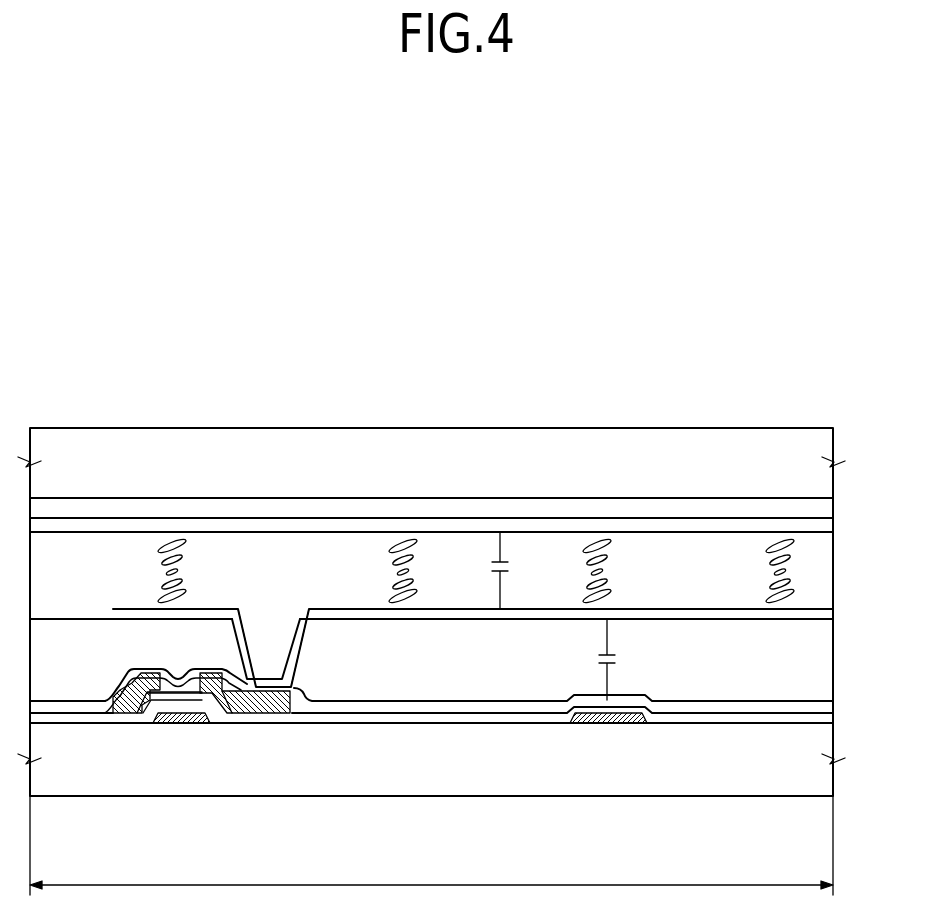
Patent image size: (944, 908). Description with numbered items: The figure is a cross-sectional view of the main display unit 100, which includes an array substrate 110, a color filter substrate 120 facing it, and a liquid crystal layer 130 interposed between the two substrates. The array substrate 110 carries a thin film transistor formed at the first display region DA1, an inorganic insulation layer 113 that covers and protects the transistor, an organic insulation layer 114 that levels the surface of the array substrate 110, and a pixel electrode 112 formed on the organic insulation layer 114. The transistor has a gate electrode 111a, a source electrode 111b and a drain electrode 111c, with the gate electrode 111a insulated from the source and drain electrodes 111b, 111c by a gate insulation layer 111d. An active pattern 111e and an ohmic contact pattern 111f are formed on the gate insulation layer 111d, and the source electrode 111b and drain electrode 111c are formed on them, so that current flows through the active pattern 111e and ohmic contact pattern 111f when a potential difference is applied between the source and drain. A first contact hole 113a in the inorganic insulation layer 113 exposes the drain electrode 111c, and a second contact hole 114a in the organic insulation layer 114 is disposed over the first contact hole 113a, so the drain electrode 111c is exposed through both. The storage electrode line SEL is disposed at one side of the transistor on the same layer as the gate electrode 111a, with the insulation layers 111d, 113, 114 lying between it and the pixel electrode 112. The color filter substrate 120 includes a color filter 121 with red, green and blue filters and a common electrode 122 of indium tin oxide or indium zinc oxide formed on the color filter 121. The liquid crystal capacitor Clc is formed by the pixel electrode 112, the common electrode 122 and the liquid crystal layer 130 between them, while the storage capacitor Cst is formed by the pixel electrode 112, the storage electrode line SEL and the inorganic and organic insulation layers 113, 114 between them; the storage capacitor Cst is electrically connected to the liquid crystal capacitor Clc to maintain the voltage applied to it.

The main display unit 100 is at (437, 379).
The array substrate 110 is at (843, 619).
The gate electrode 111a is at (180, 722).
The source electrode 111b is at (118, 706).
The drain electrode 111c is at (262, 709).
The gate insulation layer 111d is at (65, 718).
The active pattern 111e is at (139, 711).
The ohmic contact pattern 111f is at (230, 712).
The pixel electrode 112 is at (428, 612).
The inorganic insulation layer 113 is at (508, 713).
The first contact hole 113a is at (306, 683).
The organic insulation layer 114 is at (730, 698).
The second contact hole 114a is at (256, 640).
The color filter substrate 120 is at (843, 431).
The color filter 121 is at (213, 507).
The common electrode 122 is at (383, 523).
The liquid crystal layer 130 is at (778, 538).
The storage electrode line SEL is at (607, 724).
The liquid crystal capacitor Clc is at (515, 570).
The storage capacitor Cst is at (624, 659).
The first display region DA1 is at (431, 845).